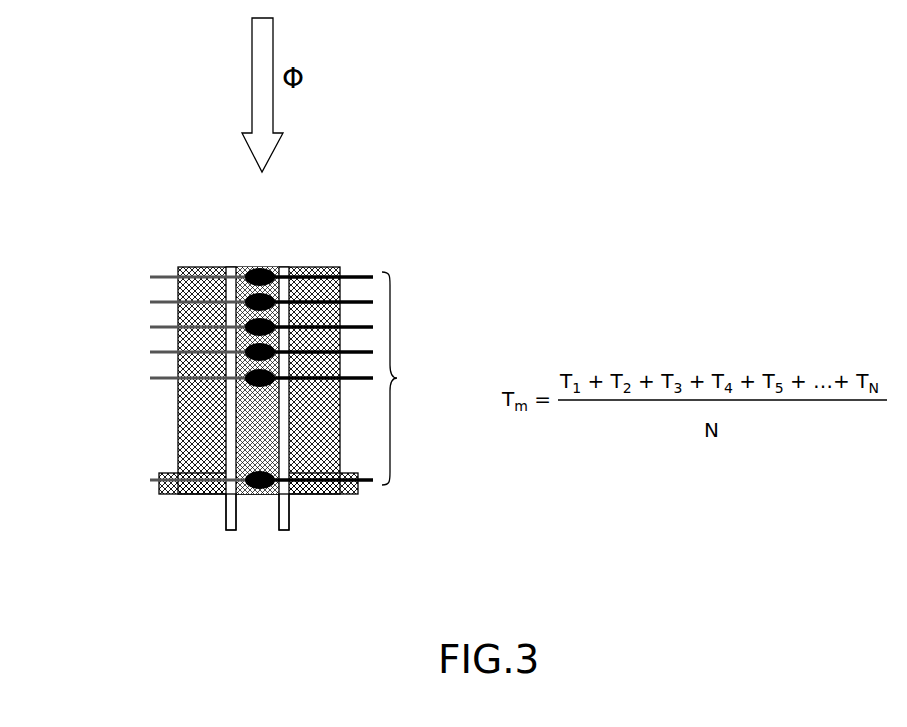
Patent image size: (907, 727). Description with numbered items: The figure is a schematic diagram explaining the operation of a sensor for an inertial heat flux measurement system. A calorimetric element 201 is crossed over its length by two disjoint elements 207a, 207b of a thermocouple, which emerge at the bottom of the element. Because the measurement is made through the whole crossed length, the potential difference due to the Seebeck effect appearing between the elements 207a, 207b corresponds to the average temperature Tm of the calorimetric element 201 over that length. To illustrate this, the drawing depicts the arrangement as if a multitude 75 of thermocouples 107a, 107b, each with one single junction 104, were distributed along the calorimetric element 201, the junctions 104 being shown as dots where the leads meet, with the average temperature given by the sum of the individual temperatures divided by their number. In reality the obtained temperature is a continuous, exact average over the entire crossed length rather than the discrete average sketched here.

The calorimetric element 201 is at (178, 406).
The single junction 104 is at (259, 268).
The thermocouple 107a is at (158, 272).
The thermocouple 107b is at (353, 272).
The multitude of thermocouples 75 is at (409, 378).
The element of a thermocouple 207a is at (228, 513).
The element of a thermocouple 207b is at (289, 513).